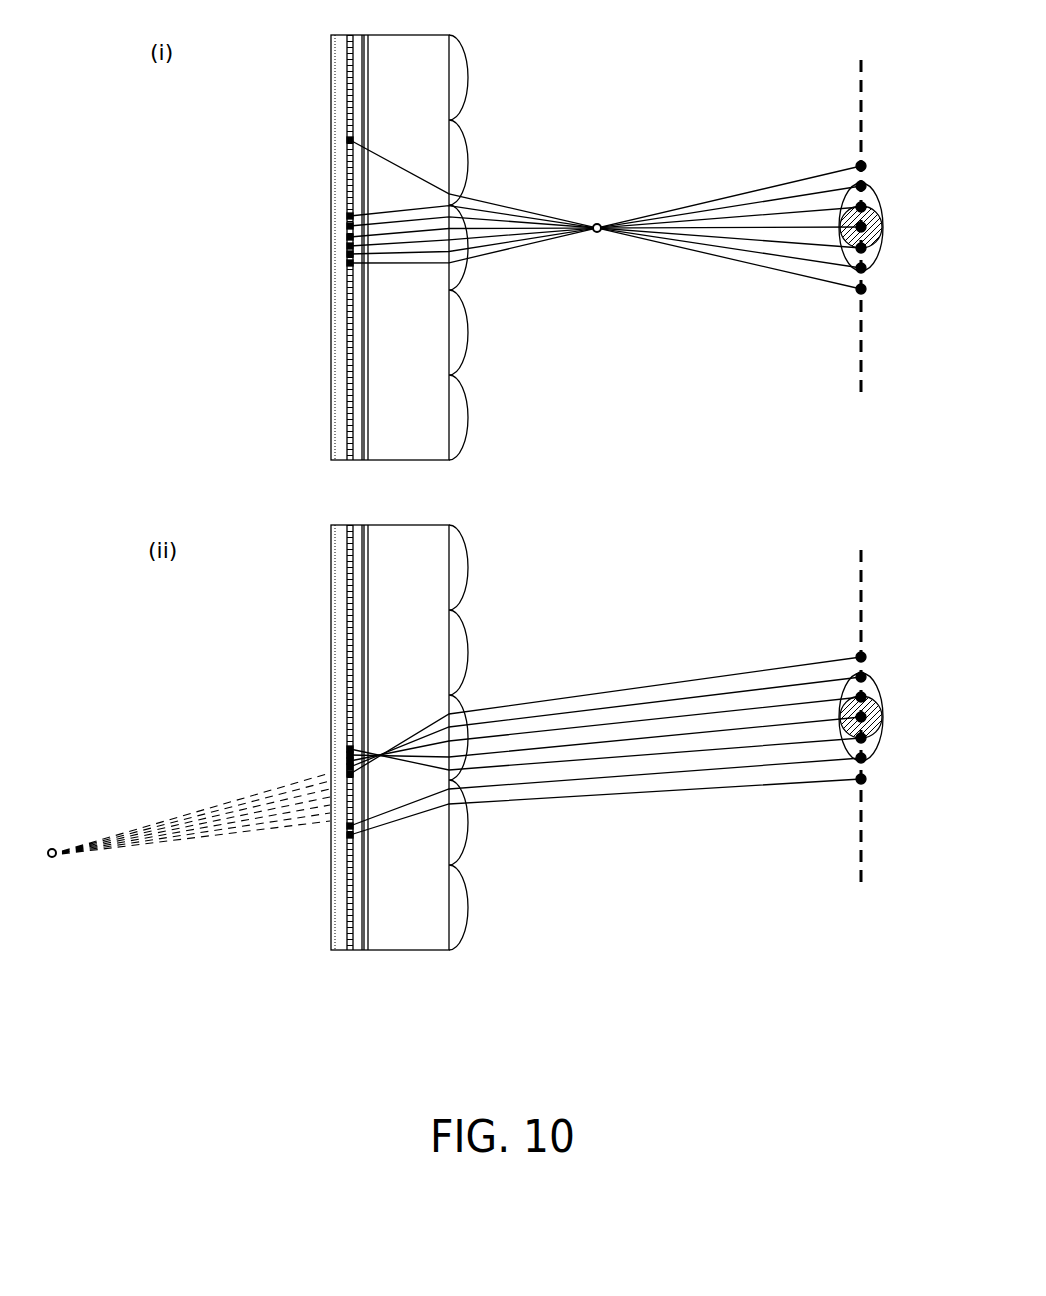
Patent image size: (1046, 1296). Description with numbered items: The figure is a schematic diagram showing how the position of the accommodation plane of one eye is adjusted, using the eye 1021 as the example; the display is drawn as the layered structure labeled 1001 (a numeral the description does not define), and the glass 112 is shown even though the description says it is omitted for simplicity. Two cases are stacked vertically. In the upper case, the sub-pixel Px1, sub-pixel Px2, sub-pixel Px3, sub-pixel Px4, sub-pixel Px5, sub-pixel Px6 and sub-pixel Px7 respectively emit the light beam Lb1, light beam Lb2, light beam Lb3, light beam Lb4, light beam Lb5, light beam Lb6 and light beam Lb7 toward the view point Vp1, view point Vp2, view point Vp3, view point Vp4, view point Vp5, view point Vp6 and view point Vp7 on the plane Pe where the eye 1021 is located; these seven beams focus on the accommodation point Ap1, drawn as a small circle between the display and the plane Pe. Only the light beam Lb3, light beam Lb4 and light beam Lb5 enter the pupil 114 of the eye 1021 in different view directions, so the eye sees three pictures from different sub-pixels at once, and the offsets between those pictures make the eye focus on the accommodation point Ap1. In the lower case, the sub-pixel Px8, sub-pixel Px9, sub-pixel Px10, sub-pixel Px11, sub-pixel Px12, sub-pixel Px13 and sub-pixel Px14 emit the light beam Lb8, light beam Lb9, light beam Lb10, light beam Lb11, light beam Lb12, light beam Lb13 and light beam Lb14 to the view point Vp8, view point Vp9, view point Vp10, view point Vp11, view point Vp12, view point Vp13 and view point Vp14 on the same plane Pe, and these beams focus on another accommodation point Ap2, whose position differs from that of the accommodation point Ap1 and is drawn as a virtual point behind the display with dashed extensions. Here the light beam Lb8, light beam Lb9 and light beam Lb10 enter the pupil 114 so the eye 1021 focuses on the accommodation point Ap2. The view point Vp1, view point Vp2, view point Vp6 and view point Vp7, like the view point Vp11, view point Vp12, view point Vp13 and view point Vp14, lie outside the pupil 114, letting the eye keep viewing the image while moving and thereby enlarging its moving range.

The display device 1001 is at (491, 38).
The glass 112 is at (466, 75).
The pupil 114 is at (883, 240).
The eye 1021 is at (877, 220).
The plane Pe is at (863, 66).
The accommodation point Ap1 is at (597, 223).
The accommodation point Ap2 is at (52, 846).
The sub-pixel Px1 is at (348, 141).
The sub-pixel Px2 is at (348, 217).
The sub-pixel Px3 is at (348, 227).
The sub-pixel Px4 is at (348, 238).
The sub-pixel Px5 is at (347, 247).
The sub-pixel Px6 is at (347, 255).
The sub-pixel Px7 is at (347, 263).
The sub-pixel Px8 is at (347, 749).
The sub-pixel Px9 is at (347, 754).
The sub-pixel Px10 is at (347, 761).
The sub-pixel Px11 is at (347, 767).
The sub-pixel Px12 is at (347, 773).
The sub-pixel Px13 is at (347, 835).
The sub-pixel Px14 is at (350, 826).
The light beam Lb1 is at (487, 202).
The light beam Lb2 is at (507, 214).
The light beam Lb3 is at (534, 223).
The light beam Lb4 is at (556, 228).
The light beam Lb5 is at (543, 233).
The light beam Lb6 is at (518, 241).
The light beam Lb7 is at (493, 253).
The light beam Lb8 is at (362, 748).
The light beam Lb9 is at (362, 756).
The light beam Lb10 is at (360, 767).
The light beam Lb11 is at (425, 801).
The light beam Lb12 is at (425, 820).
The light beam Lb13 is at (358, 840).
The light beam Lb14 is at (354, 836).
The view point Vp1 is at (866, 290).
The view point Vp2 is at (866, 269).
The view point Vp3 is at (866, 249).
The view point Vp4 is at (866, 227).
The view point Vp5 is at (866, 207).
The view point Vp6 is at (866, 186).
The view point Vp7 is at (866, 166).
The view point Vp8 is at (866, 739).
The view point Vp9 is at (866, 717).
The view point Vp10 is at (866, 697).
The view point Vp11 is at (866, 677).
The view point Vp12 is at (866, 657).
The view point Vp13 is at (866, 780).
The view point Vp14 is at (866, 759).